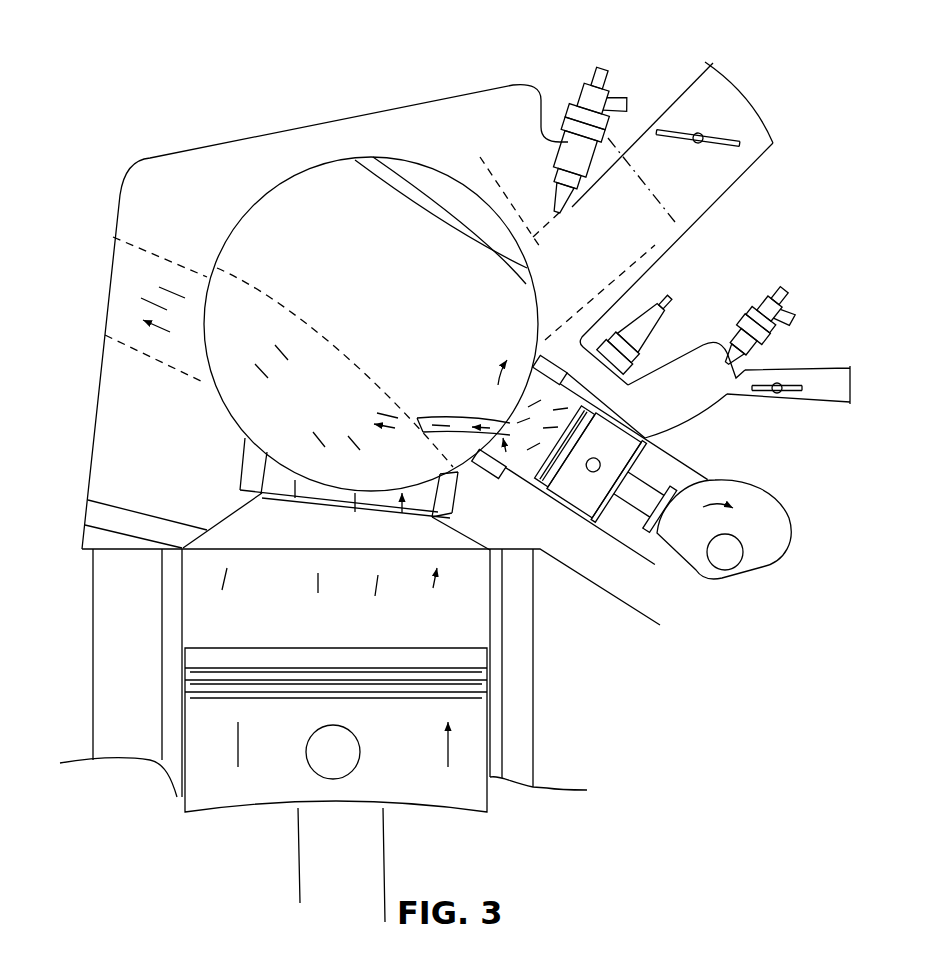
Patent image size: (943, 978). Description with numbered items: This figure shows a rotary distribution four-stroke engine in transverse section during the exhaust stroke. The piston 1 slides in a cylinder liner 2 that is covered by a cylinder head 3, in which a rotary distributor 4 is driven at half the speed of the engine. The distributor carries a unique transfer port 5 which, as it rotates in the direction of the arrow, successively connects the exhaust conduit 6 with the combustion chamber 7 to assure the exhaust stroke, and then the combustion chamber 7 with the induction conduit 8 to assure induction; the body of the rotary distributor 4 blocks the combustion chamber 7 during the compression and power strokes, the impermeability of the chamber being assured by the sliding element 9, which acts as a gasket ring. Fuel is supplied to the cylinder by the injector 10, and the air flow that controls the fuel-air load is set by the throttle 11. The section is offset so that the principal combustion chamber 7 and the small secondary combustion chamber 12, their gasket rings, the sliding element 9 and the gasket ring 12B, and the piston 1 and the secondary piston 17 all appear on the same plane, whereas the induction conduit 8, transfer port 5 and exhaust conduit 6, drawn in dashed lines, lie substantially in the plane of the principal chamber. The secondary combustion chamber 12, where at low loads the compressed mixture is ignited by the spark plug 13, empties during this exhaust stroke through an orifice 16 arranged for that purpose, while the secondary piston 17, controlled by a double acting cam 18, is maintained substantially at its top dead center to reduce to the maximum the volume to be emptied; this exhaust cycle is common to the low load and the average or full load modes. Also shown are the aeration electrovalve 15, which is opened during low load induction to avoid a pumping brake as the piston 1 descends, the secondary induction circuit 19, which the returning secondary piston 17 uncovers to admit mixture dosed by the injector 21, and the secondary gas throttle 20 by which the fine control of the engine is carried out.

The piston 1 is at (197, 708).
The cylinder liner 2 is at (182, 632).
The cylinder head 3 is at (213, 180).
The rotary distributor 4 is at (332, 203).
The transfer port 5 is at (227, 357).
The exhaust conduit 6 is at (127, 263).
The combustion chamber 7 is at (258, 528).
The induction conduit 8 is at (508, 189).
The sliding element 9 is at (252, 465).
The injector 10 is at (587, 98).
The throttle 11 is at (698, 133).
The secondary combustion chamber 12 is at (508, 440).
The gasket ring 12B is at (490, 468).
The spark plug 13 is at (648, 320).
The aeration electrovalve 15 is at (167, 528).
The orifice 16 is at (448, 420).
The secondary piston 17 is at (585, 490).
The double acting cam 18 is at (755, 553).
The secondary induction circuit 19 is at (727, 390).
The secondary gas throttle 20 is at (780, 388).
The injector 21 is at (787, 307).